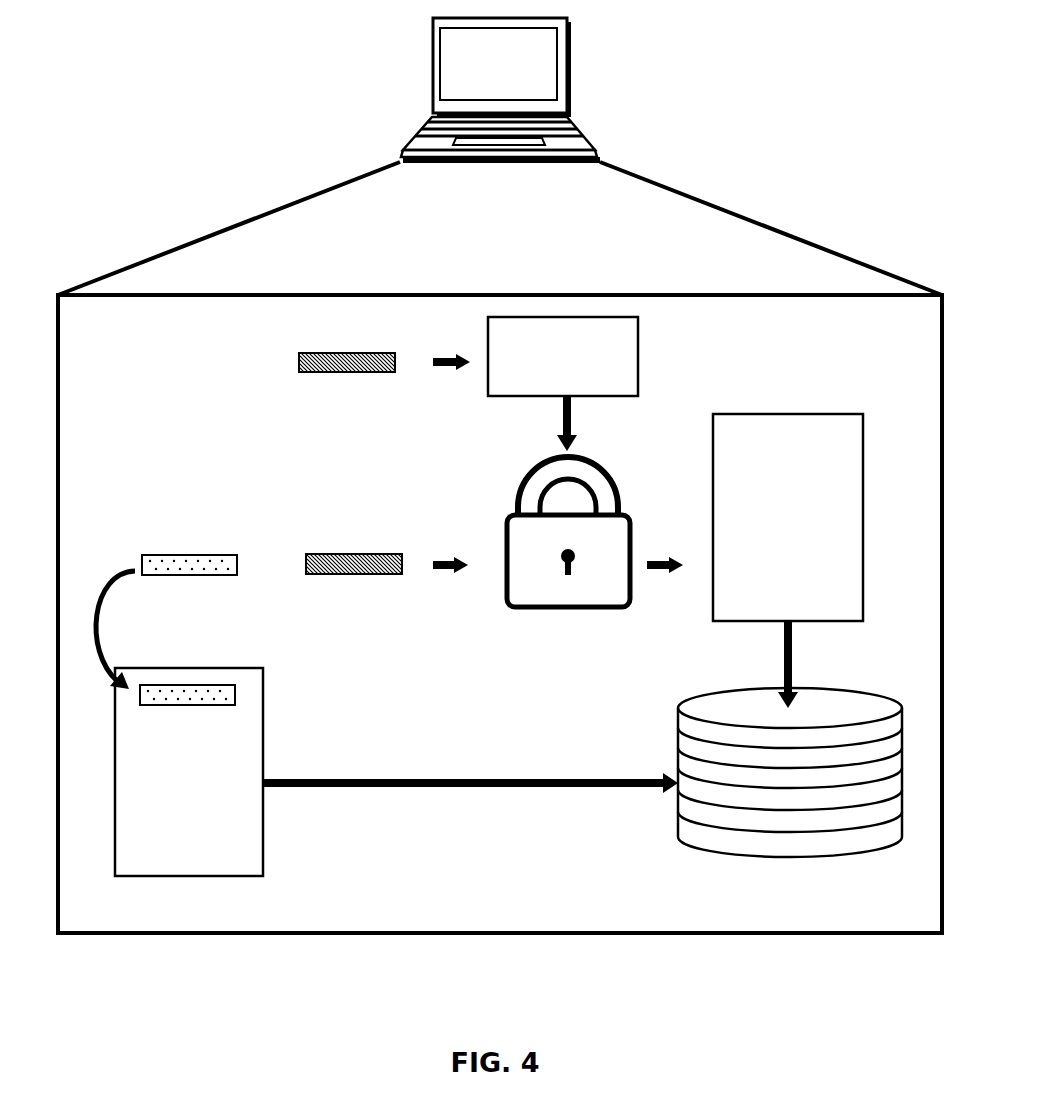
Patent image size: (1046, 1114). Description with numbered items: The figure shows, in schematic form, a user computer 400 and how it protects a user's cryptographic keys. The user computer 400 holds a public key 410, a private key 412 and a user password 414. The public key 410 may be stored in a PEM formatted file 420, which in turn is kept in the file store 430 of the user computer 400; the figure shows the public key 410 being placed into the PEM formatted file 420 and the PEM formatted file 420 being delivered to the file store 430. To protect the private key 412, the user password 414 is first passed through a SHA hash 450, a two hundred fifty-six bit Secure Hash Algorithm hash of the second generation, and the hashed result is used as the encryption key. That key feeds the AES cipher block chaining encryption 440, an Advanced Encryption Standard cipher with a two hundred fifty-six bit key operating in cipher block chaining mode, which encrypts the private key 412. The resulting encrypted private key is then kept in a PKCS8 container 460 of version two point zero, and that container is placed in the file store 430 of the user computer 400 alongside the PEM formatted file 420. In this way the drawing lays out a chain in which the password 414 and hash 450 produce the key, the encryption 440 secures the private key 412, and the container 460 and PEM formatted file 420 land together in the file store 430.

The user computer 400 is at (787, 200).
The public key 410 is at (173, 583).
The private key 412 is at (340, 588).
The user password 414 is at (333, 388).
The PEM formatted file 420 is at (203, 883).
The file store 430 is at (735, 862).
The AES-256-CBC encryption 440 is at (560, 613).
The SHA-2 hash 450 is at (592, 402).
The PKCS8 v2.0 container 460 is at (833, 630).